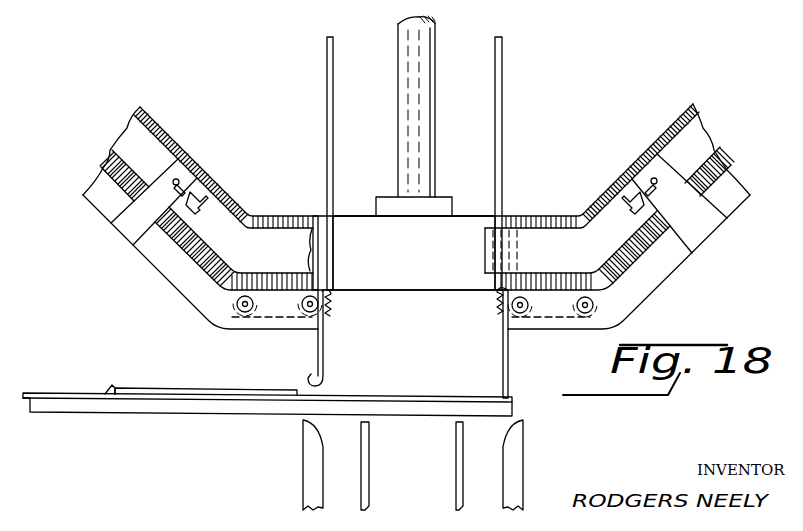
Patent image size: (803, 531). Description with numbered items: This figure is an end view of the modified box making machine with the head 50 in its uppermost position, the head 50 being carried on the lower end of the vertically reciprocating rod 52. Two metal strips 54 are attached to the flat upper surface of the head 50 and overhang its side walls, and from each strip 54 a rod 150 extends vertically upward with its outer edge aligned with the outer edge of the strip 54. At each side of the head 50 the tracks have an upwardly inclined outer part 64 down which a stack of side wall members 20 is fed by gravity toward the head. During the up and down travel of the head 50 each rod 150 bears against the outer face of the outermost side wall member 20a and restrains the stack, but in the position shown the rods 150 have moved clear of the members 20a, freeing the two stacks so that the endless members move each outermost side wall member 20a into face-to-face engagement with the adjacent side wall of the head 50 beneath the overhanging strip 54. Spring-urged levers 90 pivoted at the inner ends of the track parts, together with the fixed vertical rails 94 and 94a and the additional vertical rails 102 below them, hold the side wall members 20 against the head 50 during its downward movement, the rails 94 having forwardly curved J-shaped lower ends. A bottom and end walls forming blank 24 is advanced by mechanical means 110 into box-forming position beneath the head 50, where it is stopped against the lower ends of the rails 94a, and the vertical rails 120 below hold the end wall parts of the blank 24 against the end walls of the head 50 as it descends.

The side wall members 20 is at (190, 148).
The outermost side wall member 20a is at (334, 251).
The blank 24 is at (185, 389).
The head 50 is at (433, 265).
The rod 52 is at (430, 57).
The metal strips 54 is at (341, 213).
The upwardly inclined outer part of the tracks 64 is at (170, 282).
The levers 90 is at (328, 297).
The vertical rails 94 is at (318, 356).
The vertical rails 94a is at (509, 370).
The vertical rails 102 is at (303, 468).
The mechanical means 110 is at (108, 386).
The vertical rails 120 is at (458, 483).
The rods 150 is at (327, 150).